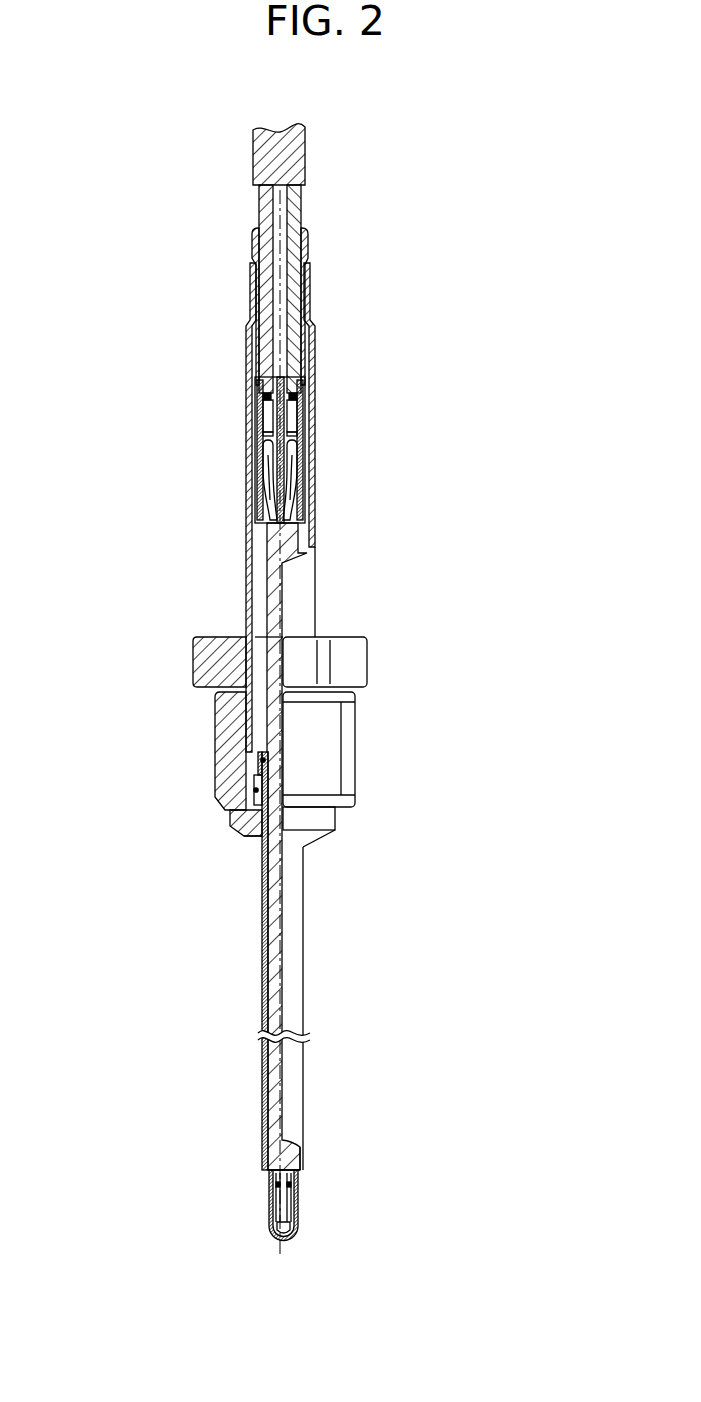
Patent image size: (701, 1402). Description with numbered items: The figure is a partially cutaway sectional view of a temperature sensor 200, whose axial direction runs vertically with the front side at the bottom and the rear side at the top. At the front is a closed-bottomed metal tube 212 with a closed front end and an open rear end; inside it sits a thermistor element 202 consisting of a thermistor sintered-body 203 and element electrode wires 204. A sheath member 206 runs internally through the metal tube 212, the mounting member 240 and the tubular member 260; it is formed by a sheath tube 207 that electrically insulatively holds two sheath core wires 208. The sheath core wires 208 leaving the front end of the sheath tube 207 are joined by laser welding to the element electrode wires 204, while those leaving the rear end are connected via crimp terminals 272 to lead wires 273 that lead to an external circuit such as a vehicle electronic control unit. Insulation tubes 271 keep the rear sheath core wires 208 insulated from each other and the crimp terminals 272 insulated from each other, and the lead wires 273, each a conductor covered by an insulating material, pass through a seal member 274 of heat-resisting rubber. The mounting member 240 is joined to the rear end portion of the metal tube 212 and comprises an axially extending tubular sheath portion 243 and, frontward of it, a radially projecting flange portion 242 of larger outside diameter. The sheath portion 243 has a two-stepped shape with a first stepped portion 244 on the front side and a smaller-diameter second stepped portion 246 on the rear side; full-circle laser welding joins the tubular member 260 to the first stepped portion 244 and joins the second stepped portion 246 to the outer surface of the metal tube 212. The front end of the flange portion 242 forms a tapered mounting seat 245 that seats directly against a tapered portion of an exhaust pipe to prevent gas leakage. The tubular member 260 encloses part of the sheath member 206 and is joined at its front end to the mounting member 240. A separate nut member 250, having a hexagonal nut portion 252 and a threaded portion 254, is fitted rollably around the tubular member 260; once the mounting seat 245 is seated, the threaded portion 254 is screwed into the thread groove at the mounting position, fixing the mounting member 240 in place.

The temperature sensor 200 is at (109, 166).
The thermistor element 202 is at (212, 1215).
The thermistor sintered-body 203 is at (270, 1233).
The element electrode wires 204 is at (277, 1207).
The sheath member 206 is at (213, 1147).
The sheath tube 207 is at (280, 1117).
The sheath core wires 208 is at (268, 507).
The metal tube 212 is at (266, 1050).
The mounting member 240 is at (148, 810).
The flange portion 242 is at (233, 822).
The sheath portion 243 is at (178, 774).
The first stepped portion 244 is at (256, 790).
The mounting seat 245 is at (247, 838).
The second stepped portion 246 is at (258, 760).
The nut member 250 is at (350, 742).
The hexagonal nut portion 252 is at (368, 659).
The threaded portion 254 is at (356, 717).
The tubular member 260 is at (250, 552).
The insulation tubes 271 is at (305, 478).
The crimp terminals 272 is at (260, 440).
The lead wires 273 is at (258, 208).
The seal member 274 is at (309, 237).